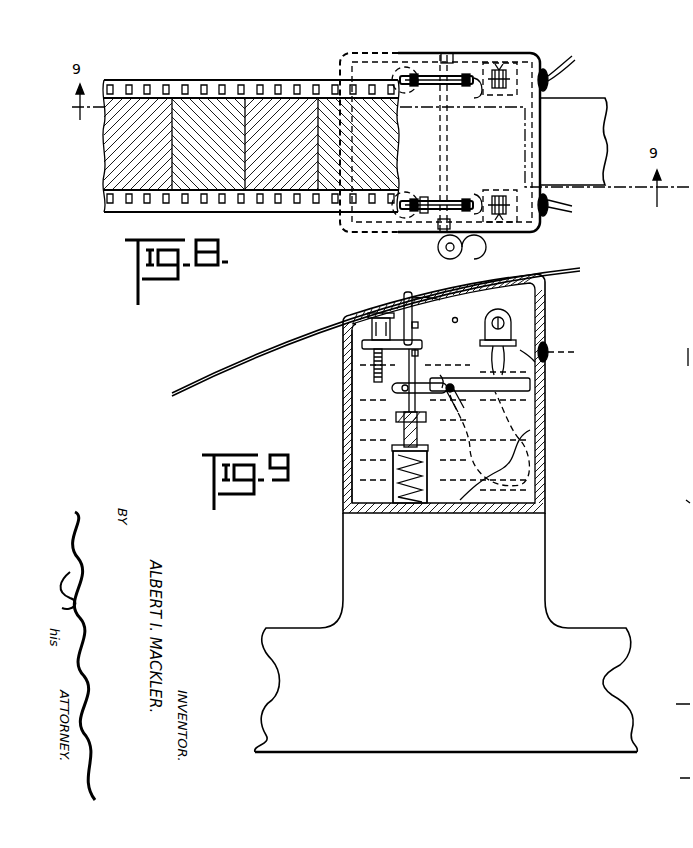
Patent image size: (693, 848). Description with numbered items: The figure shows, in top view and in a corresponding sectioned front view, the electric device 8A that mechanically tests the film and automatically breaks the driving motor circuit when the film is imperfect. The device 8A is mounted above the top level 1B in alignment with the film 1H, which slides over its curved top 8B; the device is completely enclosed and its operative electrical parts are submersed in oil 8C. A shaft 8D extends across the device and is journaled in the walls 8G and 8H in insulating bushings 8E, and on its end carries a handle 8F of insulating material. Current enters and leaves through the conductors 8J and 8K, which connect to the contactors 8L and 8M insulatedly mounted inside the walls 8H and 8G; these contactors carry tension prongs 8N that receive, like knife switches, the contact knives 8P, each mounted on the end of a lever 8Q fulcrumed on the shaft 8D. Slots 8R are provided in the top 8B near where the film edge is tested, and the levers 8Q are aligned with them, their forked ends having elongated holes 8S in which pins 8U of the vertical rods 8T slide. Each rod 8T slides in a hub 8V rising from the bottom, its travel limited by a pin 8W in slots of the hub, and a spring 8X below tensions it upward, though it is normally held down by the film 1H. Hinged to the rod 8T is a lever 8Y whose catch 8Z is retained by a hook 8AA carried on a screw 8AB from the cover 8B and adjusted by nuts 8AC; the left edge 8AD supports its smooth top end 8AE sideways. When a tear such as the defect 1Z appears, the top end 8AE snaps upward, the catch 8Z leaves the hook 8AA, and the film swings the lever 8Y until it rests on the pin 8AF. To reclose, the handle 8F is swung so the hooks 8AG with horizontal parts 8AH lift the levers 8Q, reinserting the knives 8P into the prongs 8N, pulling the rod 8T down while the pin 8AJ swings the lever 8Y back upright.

In FIG. 8, the film 1H is at (236, 80).
In FIG. 9, the film 1H is at (222, 370).
In FIG. 8, the defect in the film 1Z is at (304, 212).
In FIG. 9, the top level 1B is at (446, 632).
In FIG. 9, the curved top 8B is at (521, 280).
In FIG. 8, the wall 8H is at (380, 62).
In FIG. 8, the slots 8R is at (437, 75).
In FIG. 8, the insulating bushings 8E is at (452, 57).
In FIG. 8, the conductor 8J is at (550, 70).
In FIG. 9, the conductor 8J is at (549, 352).
In FIG. 8, the contactor 8L is at (480, 94).
In FIG. 9, the contactor 8L is at (500, 313).
In FIG. 8, the horizontal parts 8AH is at (472, 88).
In FIG. 8, the hooks 8AG is at (460, 108).
In FIG. 9, the hooks 8AG is at (462, 400).
In FIG. 8, the shaft 8D is at (445, 152).
In FIG. 9, the shaft 8D is at (450, 385).
In FIG. 8, the pin 8AJ is at (424, 196).
In FIG. 9, the pin 8AJ is at (418, 353).
In FIG. 8, the wall 8G is at (352, 232).
In FIG. 8, the hubs 8V is at (398, 212).
In FIG. 9, the hubs 8V is at (437, 505).
In FIG. 8, the handle 8F is at (468, 247).
In FIG. 9, the handle 8F is at (532, 441).
In FIG. 8, the conductor 8K is at (553, 202).
In FIG. 8, the contactor 8M is at (508, 208).
In FIG. 9, the left edge 8AD is at (390, 313).
In FIG. 9, the top end of lever 8AE is at (409, 293).
In FIG. 9, the lever 8Y is at (418, 306).
In FIG. 9, the catch 8Z is at (419, 324).
In FIG. 9, the pin 8AF is at (458, 320).
In FIG. 9, the screw 8AB is at (366, 336).
In FIG. 9, the hook 8AA is at (419, 337).
In FIG. 9, the nuts 8AC is at (370, 360).
In FIG. 9, the electric device 8A is at (348, 372).
In FIG. 9, the pins 8U is at (393, 388).
In FIG. 9, the tension prongs 8N is at (545, 365).
In FIG. 9, the contact knives 8P is at (534, 383).
In FIG. 9, the elongated holes 8S is at (398, 412).
In FIG. 9, the oil 8C is at (404, 426).
In FIG. 9, the lever 8Q is at (535, 402).
In FIG. 9, the vertical rod 8T is at (410, 441).
In FIG. 9, the pin 8W is at (395, 452).
In FIG. 9, the spring 8X is at (391, 505).